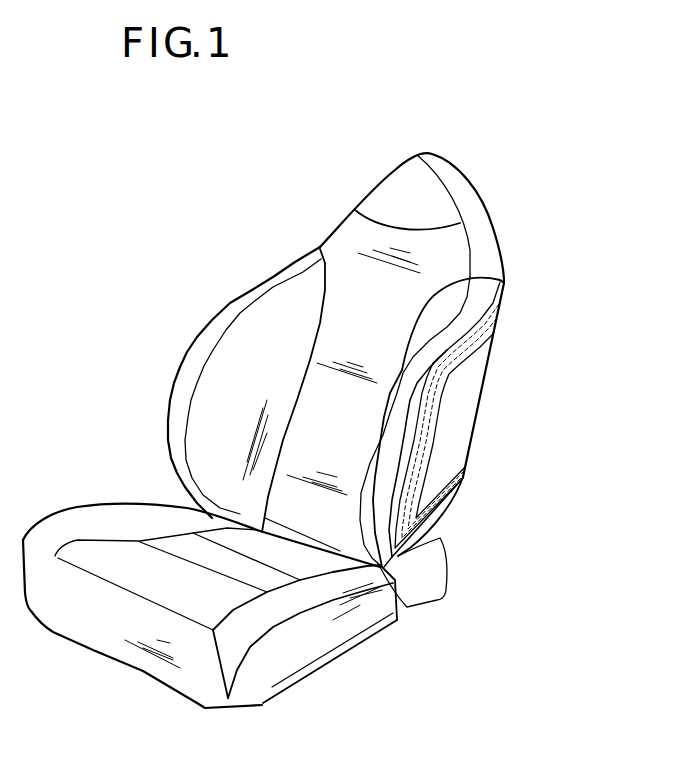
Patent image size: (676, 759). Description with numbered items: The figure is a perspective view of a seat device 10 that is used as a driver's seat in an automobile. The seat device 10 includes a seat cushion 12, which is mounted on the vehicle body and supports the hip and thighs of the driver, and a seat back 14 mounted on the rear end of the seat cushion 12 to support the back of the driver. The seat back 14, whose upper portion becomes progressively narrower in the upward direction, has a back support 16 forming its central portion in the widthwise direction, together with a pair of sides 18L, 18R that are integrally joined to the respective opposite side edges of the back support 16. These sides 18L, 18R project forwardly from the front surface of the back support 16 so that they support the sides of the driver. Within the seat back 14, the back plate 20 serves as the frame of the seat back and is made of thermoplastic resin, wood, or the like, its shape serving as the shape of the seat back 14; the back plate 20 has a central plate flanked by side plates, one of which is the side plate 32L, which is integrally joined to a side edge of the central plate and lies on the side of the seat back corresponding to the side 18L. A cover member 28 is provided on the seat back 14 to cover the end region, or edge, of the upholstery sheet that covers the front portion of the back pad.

The seat device 10 is at (528, 98).
The seat cushion 12 is at (308, 686).
The seat back 14 is at (488, 195).
The back support 16 is at (388, 193).
The side 18R is at (248, 294).
The side 18L is at (482, 298).
The back plate 20 is at (452, 444).
The side plate 32L is at (454, 426).
The cover member 28 is at (472, 358).